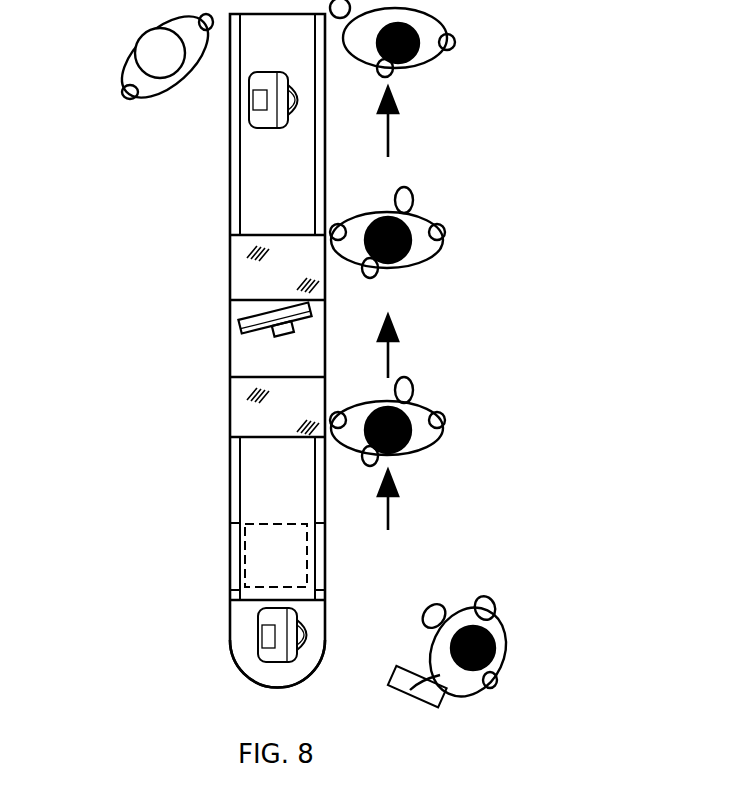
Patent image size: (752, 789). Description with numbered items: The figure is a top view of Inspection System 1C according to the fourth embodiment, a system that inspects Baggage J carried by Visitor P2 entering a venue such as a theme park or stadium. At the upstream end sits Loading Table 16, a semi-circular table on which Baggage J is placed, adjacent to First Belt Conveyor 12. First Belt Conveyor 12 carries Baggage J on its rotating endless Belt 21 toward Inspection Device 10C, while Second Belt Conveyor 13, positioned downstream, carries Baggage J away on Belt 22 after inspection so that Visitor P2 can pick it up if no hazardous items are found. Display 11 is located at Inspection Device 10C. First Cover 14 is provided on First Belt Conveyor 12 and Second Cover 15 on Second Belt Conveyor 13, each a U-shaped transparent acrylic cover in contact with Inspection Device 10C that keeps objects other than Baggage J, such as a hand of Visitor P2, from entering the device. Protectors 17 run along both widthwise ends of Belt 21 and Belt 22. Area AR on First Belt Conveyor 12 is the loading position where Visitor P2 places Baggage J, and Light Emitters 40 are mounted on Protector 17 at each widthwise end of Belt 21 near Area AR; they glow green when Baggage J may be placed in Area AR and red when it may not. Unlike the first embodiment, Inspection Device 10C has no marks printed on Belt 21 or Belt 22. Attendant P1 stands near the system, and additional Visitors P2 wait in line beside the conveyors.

The inspection system 1C is at (566, 95).
The inspection device 10C is at (233, 370).
The display 11 is at (243, 320).
The first belt conveyor 12 is at (155, 509).
The second belt conveyor 13 is at (152, 152).
The first cover 14 is at (233, 410).
The second cover 15 is at (245, 273).
The loading table 16 is at (240, 648).
The protector 17 is at (232, 125).
The belt 21 is at (245, 460).
The belt 22 is at (240, 215).
The light emitter 40 is at (238, 572).
The area AR is at (300, 585).
The baggage J is at (297, 655).
The attendant P1 is at (128, 88).
The visitor P2 is at (440, 48).